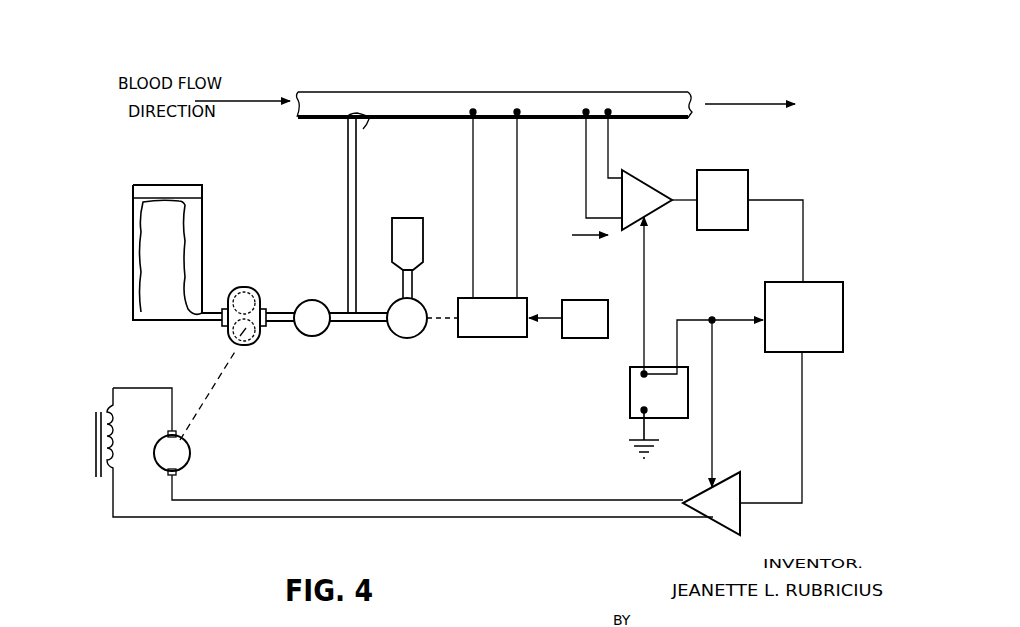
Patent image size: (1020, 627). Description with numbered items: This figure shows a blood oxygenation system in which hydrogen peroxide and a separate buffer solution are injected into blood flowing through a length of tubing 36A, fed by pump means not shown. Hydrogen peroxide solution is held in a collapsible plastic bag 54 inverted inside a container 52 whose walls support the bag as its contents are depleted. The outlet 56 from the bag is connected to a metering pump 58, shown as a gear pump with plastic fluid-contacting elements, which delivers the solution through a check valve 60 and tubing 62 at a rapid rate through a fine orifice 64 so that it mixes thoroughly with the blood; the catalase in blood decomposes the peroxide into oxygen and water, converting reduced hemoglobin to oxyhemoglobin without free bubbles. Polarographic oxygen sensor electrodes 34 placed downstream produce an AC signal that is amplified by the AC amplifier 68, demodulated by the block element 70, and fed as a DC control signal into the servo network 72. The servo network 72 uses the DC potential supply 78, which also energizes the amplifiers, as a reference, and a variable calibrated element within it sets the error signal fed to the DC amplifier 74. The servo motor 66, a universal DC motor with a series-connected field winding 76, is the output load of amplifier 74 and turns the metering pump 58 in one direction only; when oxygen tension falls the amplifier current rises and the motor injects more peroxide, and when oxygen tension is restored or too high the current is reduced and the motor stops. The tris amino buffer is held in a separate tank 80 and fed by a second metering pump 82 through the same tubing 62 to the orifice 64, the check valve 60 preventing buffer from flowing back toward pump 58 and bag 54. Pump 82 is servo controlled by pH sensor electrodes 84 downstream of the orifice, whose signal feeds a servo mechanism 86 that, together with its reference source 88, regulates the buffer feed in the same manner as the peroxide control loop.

The polarographic oxygen sensor electrodes 34 is at (594, 108).
The length of tubing 36A is at (658, 98).
The container 52 is at (202, 242).
The collapsible plastic bag 54 is at (154, 246).
The outlet 56 is at (219, 324).
The metering pump 58 is at (237, 288).
The check valve 60 is at (304, 336).
The tubing 62 is at (348, 206).
The fine orifice 64 is at (367, 132).
The servo motor 66 is at (184, 464).
The AC amplifier 68 is at (632, 186).
The demodulator block element 70 is at (722, 188).
The servo network 72 is at (823, 354).
The DC amplifier 74 is at (730, 512).
The series-connected field winding 76 is at (100, 418).
The DC potential supply 78 is at (629, 402).
The tank 80 is at (400, 230).
The metering pump 82 is at (403, 338).
The pH sensor electrodes 84 is at (486, 108).
The servo mechanism 86 is at (490, 337).
The reference source 88 is at (576, 338).